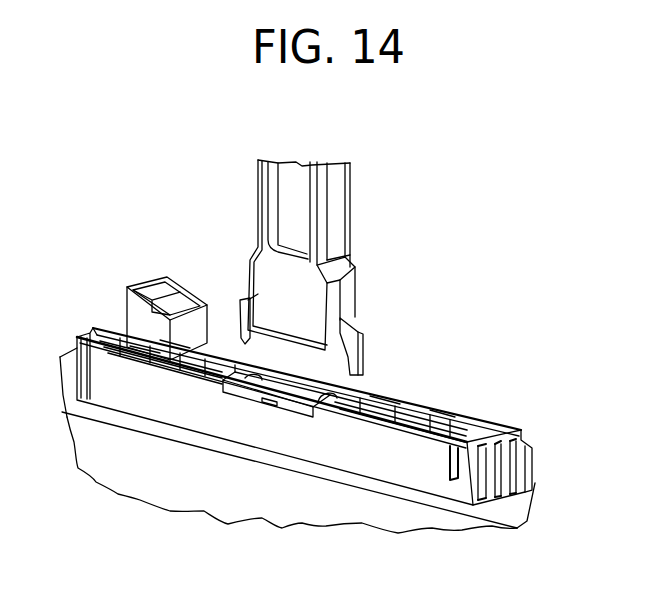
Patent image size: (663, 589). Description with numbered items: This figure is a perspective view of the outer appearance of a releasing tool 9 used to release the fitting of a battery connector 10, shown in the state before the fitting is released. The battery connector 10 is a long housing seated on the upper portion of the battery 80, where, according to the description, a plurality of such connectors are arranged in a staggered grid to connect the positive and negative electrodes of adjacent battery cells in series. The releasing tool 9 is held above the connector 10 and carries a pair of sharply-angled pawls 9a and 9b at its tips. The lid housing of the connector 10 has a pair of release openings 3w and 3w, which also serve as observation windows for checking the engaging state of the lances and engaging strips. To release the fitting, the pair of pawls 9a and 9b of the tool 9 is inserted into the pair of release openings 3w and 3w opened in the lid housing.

The releasing tool 9 is at (327, 230).
The pawl 9a is at (240, 307).
The pawl 9b is at (360, 333).
The battery connector 10 is at (500, 388).
The release opening 3w is at (257, 395).
The battery 80 is at (525, 518).